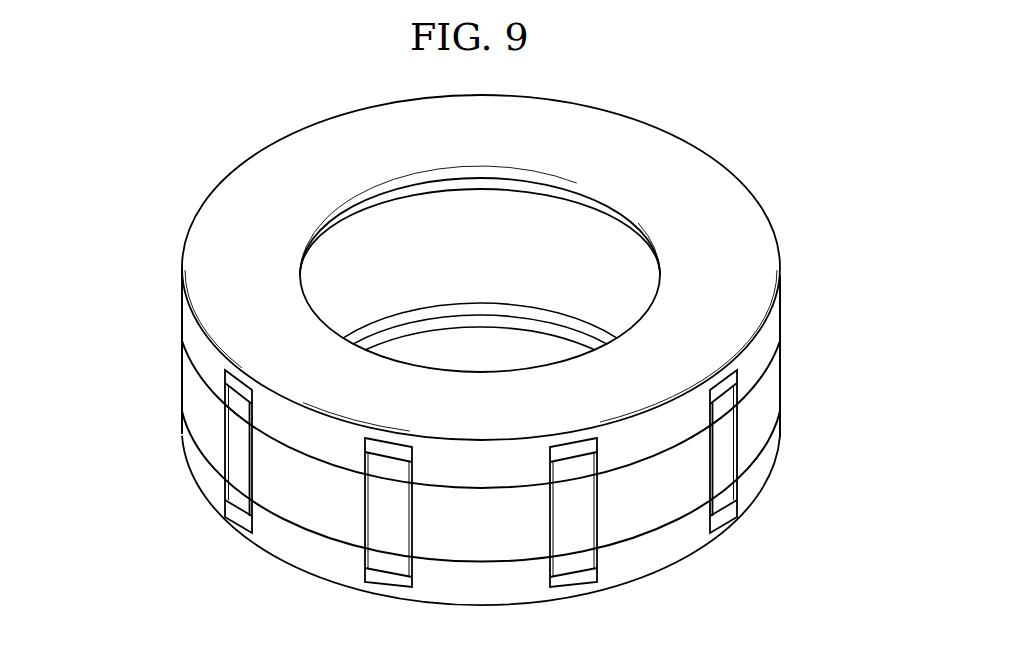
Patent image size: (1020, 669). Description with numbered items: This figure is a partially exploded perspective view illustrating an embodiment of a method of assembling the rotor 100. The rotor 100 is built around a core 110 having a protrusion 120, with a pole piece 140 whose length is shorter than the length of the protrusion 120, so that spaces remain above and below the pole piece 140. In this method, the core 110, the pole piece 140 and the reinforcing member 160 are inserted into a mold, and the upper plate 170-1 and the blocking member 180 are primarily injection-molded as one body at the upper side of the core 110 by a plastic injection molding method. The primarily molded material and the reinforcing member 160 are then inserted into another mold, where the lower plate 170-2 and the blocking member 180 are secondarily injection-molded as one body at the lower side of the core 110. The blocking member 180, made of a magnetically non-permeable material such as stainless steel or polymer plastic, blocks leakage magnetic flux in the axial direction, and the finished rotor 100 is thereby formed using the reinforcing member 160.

The rotor 100 is at (742, 143).
The core 110 is at (172, 363).
The protrusion 120 is at (236, 457).
The pole piece 140 is at (288, 483).
The reinforcing member 160 is at (395, 452).
The upper plate 170-1 is at (183, 250).
The lower plate 170-2 is at (383, 587).
The blocking member 180 is at (327, 450).